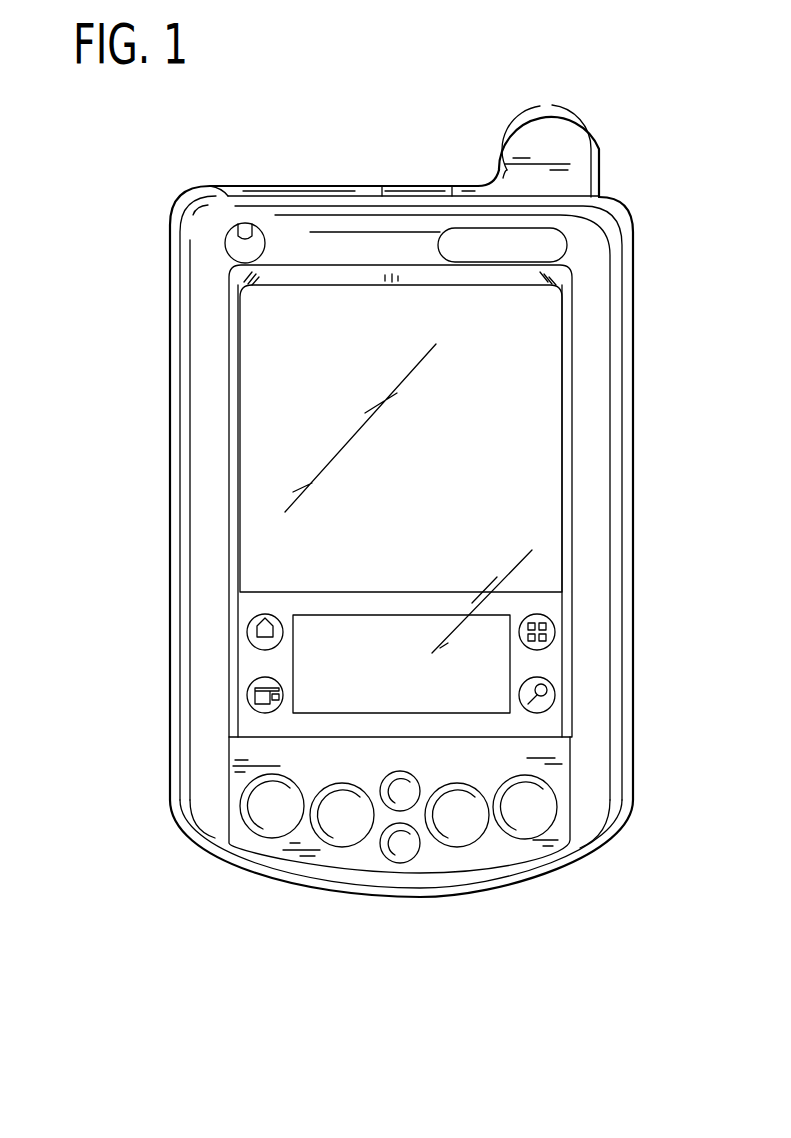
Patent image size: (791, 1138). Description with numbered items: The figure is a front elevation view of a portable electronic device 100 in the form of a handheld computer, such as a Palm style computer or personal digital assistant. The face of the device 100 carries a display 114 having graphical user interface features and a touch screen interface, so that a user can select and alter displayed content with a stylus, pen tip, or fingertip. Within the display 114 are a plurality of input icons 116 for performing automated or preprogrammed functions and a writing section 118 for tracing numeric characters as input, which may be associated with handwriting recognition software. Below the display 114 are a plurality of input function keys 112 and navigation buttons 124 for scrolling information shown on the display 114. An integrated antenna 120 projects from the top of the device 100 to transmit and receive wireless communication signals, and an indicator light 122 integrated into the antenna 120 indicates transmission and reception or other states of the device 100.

The portable electronic device 100 is at (357, 118).
The input function keys 112 is at (342, 825).
The display 114 is at (430, 463).
The input icons 116 is at (247, 632).
The writing section 118 is at (410, 675).
The integrated antenna 120 is at (560, 143).
The indicator light 122 is at (520, 104).
The navigation buttons 124 is at (403, 857).